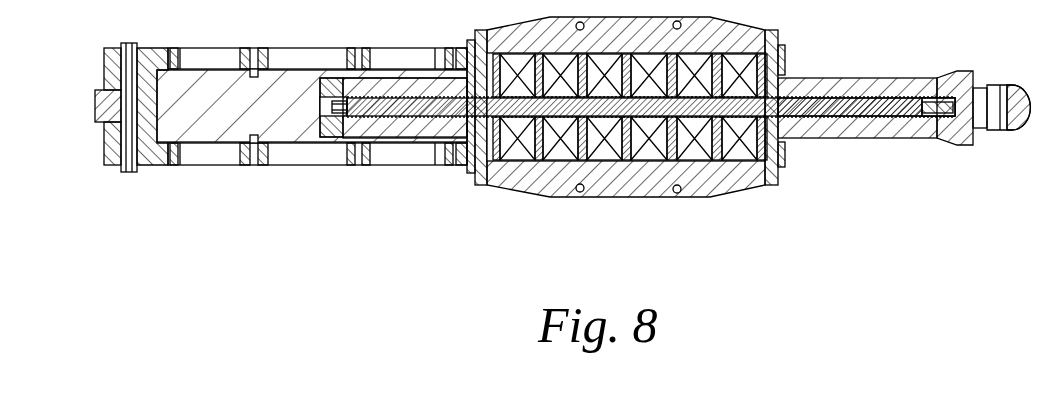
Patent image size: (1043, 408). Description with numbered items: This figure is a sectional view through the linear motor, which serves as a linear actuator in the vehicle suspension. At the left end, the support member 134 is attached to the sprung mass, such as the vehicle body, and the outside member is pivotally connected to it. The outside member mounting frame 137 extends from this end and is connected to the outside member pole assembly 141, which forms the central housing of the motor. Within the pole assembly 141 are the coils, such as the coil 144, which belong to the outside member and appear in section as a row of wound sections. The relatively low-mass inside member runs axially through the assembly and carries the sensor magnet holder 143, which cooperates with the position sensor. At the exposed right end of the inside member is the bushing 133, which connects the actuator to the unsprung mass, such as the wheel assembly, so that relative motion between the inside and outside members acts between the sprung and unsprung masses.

The bushing 133 is at (1013, 131).
The support member 134 is at (93, 102).
The outside member mounting frame 137 is at (300, 167).
The outside member pole assembly 141 is at (530, 193).
The sensor magnet holder 143 is at (852, 78).
The coil 144 is at (643, 167).